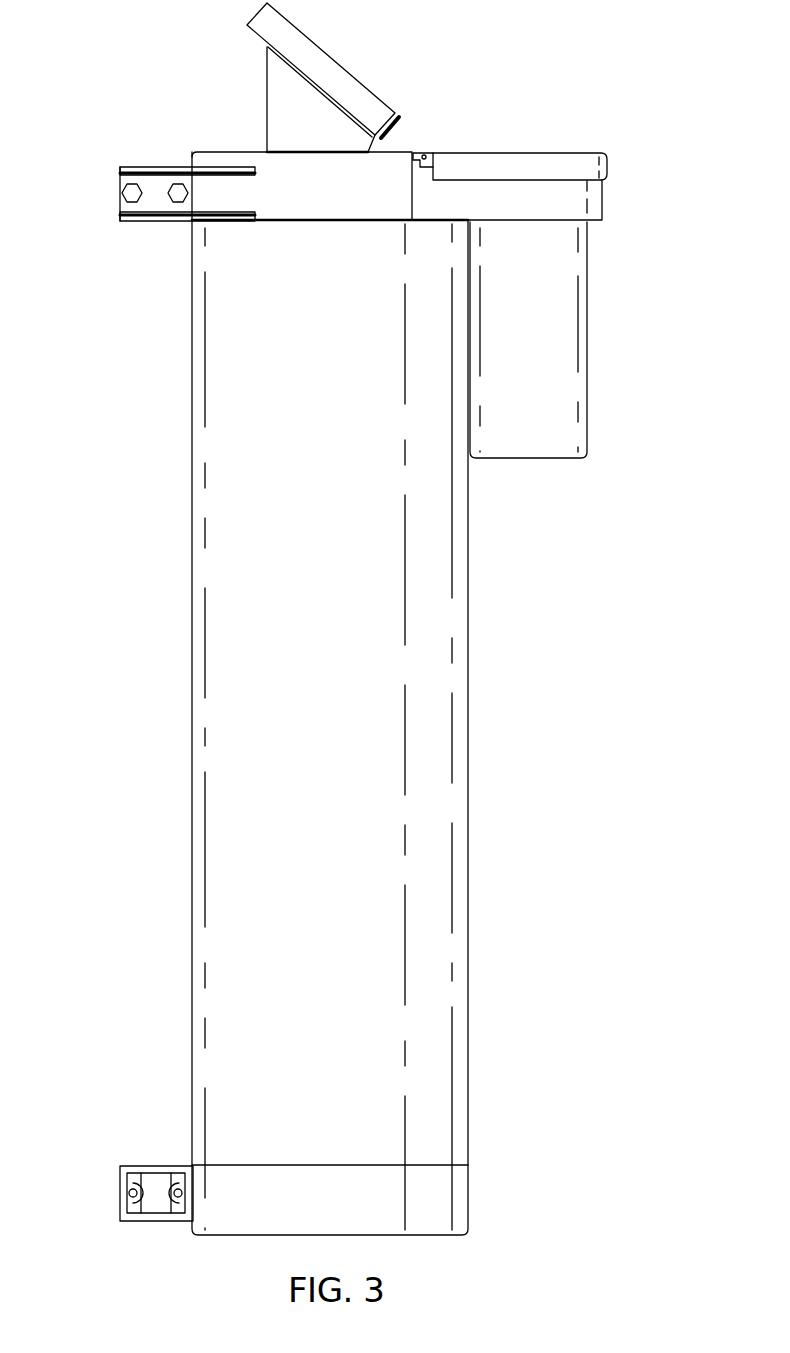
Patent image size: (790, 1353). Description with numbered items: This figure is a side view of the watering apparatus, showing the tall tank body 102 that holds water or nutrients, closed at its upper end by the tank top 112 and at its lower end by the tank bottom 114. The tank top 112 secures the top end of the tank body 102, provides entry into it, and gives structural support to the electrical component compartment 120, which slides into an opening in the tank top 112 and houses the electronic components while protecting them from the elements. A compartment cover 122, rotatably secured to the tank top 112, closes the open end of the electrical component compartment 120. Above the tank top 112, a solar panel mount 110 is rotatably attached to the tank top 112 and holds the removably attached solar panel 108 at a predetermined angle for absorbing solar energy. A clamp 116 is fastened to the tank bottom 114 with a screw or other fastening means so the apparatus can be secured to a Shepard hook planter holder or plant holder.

The tank body 102 is at (225, 607).
The solar panel 108 is at (340, 62).
The solar panel mount 110 is at (283, 97).
The tank top 112 is at (300, 207).
The tank bottom 114 is at (468, 1198).
The clamp 116 is at (125, 1168).
The electrical component compartment 120 is at (587, 383).
The compartment cover 122 is at (548, 165).